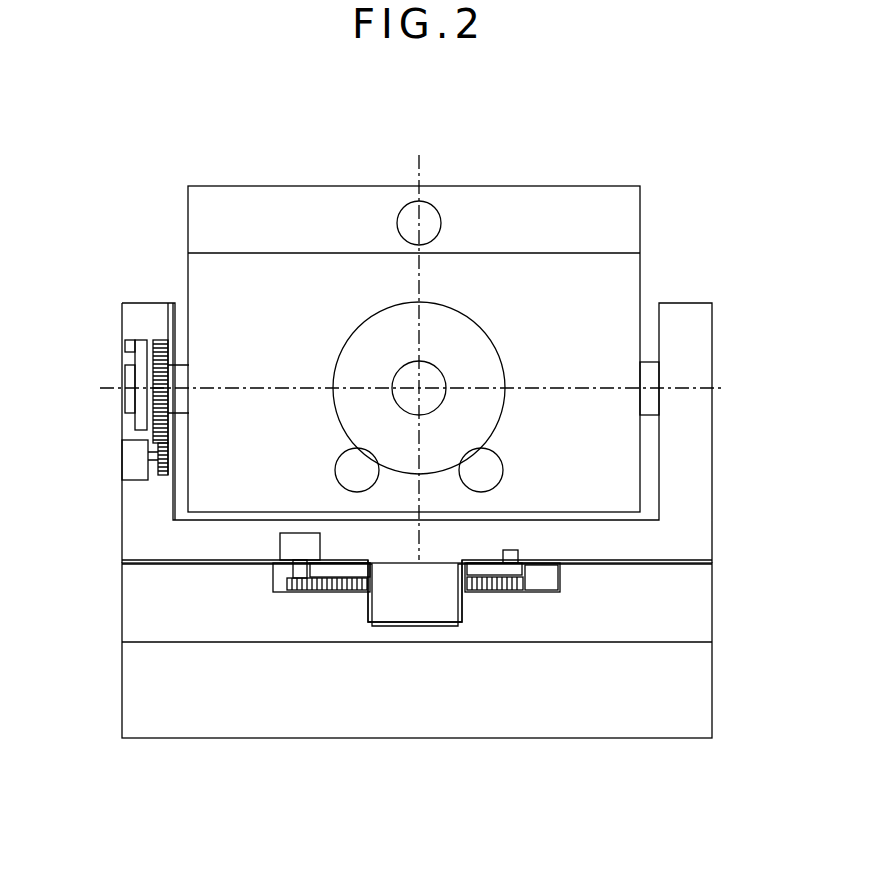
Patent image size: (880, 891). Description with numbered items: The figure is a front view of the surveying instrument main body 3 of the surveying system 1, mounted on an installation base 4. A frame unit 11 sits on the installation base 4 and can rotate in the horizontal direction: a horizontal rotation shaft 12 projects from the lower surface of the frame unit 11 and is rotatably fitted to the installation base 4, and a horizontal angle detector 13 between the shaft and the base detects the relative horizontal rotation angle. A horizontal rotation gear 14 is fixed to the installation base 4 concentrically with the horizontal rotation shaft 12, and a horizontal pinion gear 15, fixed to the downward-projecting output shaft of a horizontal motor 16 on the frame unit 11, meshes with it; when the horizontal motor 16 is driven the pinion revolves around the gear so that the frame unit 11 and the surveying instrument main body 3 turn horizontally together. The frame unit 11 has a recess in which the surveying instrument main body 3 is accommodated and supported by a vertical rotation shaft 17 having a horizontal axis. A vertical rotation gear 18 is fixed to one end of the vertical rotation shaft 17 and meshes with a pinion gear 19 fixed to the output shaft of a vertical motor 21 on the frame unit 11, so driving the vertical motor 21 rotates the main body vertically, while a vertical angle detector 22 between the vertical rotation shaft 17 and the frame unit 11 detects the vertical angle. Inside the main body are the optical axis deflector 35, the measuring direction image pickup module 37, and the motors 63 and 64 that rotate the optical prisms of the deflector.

The processing apparatus 1 is at (342, 151).
The surveying instrument main body 3 is at (535, 186).
The installation base 4 is at (104, 629).
The frame unit 11 is at (692, 303).
The horizontal rotation shaft 12 is at (465, 606).
The horizontal angle detector 13 is at (544, 552).
The horizontal rotation gear 14 is at (536, 578).
The horizontal pinion gear 15 is at (282, 583).
The horizontal motor 16 is at (280, 550).
The vertical rotation shaft 17 is at (650, 362).
The vertical rotation gear 18 is at (158, 336).
The pinion gear 19 is at (163, 478).
The vertical motor 21 is at (136, 482).
The vertical angle detector 22 is at (140, 322).
The optical axis deflector 35 is at (515, 402).
The measuring direction image pickup module 37 is at (441, 214).
The motor 63 is at (504, 474).
The motor 64 is at (337, 466).